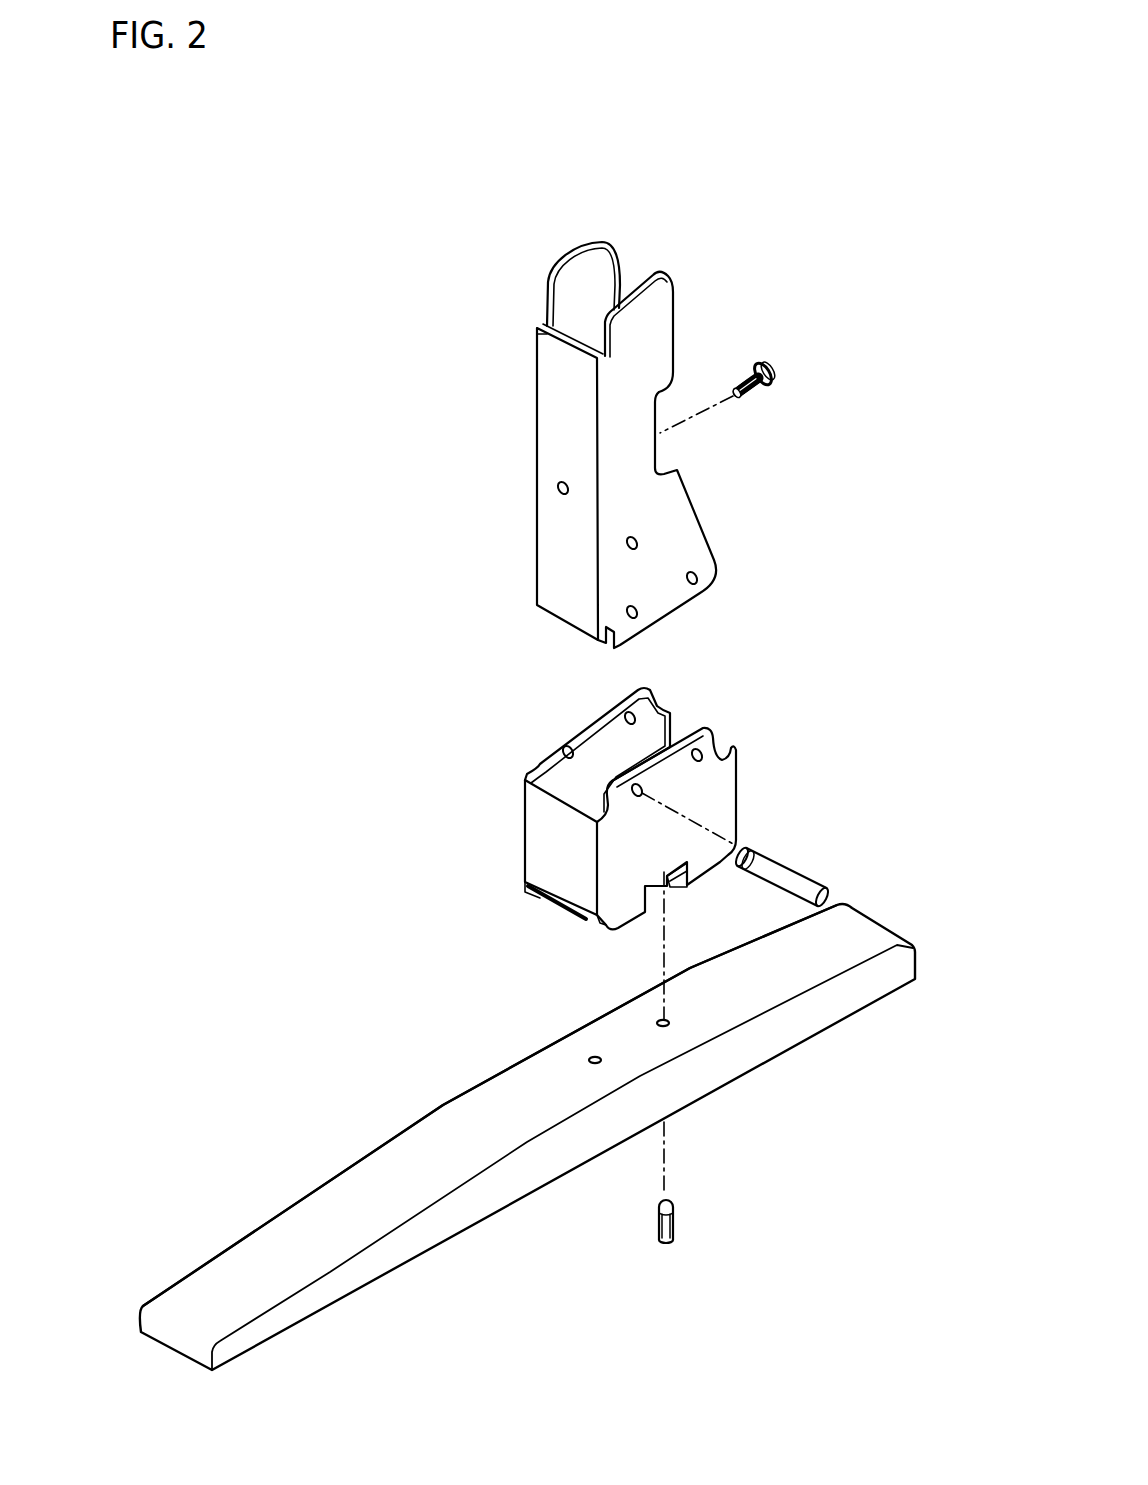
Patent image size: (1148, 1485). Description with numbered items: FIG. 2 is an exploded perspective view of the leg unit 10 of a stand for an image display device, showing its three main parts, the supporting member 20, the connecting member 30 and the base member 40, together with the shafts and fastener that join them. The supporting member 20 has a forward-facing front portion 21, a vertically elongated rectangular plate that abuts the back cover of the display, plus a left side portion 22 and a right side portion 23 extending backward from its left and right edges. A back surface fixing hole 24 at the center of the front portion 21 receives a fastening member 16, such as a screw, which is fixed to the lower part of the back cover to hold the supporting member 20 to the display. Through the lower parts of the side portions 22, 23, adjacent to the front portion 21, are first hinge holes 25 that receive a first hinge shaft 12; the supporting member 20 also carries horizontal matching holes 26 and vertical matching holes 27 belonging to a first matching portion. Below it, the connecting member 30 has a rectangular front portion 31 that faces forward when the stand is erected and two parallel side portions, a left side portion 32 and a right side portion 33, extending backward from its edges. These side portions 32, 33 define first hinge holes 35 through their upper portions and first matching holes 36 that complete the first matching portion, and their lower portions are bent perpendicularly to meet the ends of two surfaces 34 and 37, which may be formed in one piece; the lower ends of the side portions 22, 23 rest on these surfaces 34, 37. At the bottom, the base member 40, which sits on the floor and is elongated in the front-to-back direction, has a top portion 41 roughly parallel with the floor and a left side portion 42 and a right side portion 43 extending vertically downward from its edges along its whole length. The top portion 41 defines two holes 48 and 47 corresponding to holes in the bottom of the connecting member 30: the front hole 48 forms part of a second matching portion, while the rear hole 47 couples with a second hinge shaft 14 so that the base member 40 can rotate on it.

The leg unit 10 is at (250, 485).
The first hinge shaft 12 is at (793, 875).
The second hinge shaft 14 is at (670, 1218).
The fastening member 16 is at (774, 372).
The supporting member 20 is at (508, 297).
The front portion 21 is at (553, 402).
The left side portion 22 is at (578, 278).
The right side portion 23 is at (660, 310).
The back surface fixing hole 24 is at (558, 490).
The first hinge holes 25 is at (640, 612).
The horizontal matching holes 26 is at (698, 580).
The vertical matching holes 27 is at (638, 543).
The connecting member 30 is at (500, 760).
The front portion 31 is at (543, 824).
The left side portion 32 is at (597, 745).
The right side portion 33 is at (713, 803).
The surface 34 is at (597, 918).
The first hinge holes 35 is at (641, 786).
The first matching holes 36 is at (703, 757).
The surface 37 is at (672, 888).
The base member 40 is at (393, 1088).
The top portion 41 is at (330, 1220).
The left side portion 42 is at (360, 1157).
The right side portion 43 is at (403, 1245).
The hole 47 is at (657, 1021).
The hole 48 is at (591, 1059).